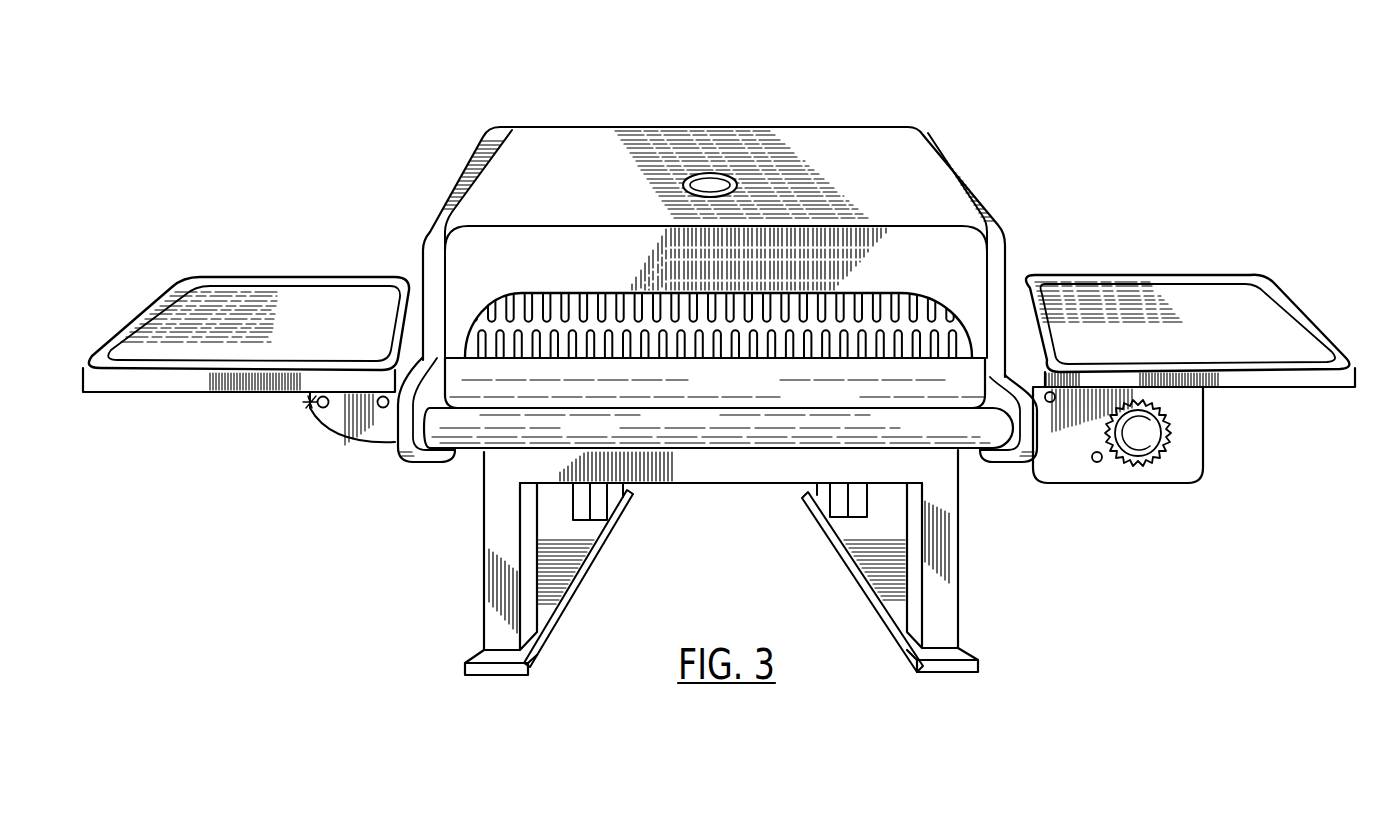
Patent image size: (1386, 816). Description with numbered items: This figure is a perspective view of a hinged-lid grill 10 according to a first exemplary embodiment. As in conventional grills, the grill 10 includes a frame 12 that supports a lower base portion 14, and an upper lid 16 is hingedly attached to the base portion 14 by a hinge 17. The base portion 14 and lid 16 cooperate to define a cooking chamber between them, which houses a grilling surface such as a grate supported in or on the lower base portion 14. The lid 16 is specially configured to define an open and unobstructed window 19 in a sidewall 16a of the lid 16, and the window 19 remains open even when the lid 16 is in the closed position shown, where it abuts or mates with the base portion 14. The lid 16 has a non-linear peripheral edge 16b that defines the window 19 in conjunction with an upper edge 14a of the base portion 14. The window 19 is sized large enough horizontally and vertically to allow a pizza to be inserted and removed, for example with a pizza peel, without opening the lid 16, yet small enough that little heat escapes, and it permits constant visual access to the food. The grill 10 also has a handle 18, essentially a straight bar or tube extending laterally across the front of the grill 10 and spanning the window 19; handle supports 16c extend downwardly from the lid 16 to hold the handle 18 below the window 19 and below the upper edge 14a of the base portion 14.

The grill 10 is at (818, 91).
The frame 12 is at (558, 566).
The lower base portion 14 is at (478, 378).
The upper edge of the base portion 14a is at (927, 348).
The upper lid 16 is at (921, 155).
The sidewall of the lid 16a is at (912, 238).
The non-linear peripheral edge of the lid 16b is at (867, 297).
The handle supports 16c is at (395, 436).
The hinge 17 is at (458, 352).
The handle 18 is at (770, 424).
The window 19 is at (742, 333).